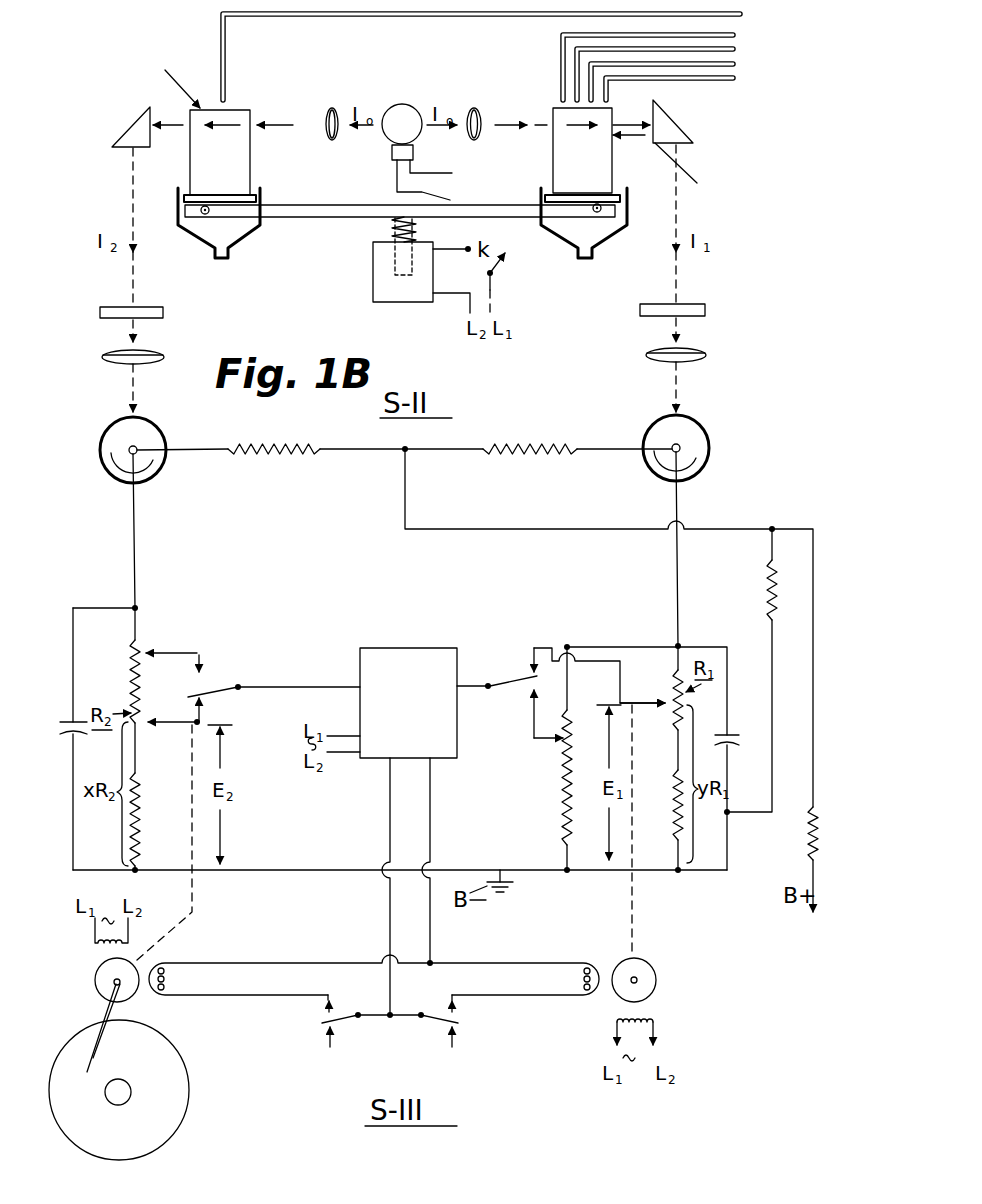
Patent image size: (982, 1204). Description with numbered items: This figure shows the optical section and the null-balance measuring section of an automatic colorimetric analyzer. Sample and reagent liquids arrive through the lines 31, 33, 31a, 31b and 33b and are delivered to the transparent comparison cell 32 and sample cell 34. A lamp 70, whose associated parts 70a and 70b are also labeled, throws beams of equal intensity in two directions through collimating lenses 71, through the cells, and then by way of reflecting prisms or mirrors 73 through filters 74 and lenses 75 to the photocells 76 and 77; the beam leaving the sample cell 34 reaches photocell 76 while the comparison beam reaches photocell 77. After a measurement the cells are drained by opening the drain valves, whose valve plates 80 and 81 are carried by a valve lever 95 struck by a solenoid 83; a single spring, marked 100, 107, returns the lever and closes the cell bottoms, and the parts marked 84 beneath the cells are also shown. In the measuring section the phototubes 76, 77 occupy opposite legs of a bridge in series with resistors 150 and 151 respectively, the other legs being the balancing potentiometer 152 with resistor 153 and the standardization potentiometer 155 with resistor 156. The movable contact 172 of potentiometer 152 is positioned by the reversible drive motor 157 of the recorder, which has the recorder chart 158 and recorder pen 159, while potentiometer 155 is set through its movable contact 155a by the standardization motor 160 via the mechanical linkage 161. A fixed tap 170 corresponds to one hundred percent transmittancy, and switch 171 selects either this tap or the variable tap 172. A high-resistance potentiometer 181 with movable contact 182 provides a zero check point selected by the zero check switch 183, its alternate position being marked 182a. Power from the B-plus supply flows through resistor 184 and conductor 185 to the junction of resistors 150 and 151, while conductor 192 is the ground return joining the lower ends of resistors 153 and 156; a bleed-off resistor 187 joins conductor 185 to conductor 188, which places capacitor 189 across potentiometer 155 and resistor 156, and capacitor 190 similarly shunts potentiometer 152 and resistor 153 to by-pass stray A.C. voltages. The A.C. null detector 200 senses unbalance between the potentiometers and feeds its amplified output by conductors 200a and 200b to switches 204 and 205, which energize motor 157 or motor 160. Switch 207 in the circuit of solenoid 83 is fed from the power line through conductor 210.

The line 31 is at (227, 67).
The line 31a is at (577, 62).
The line 31b is at (705, 67).
The comparison cell 32 is at (237, 150).
The line 33 is at (560, 95).
The line 33b is at (678, 82).
The sample cell 34 is at (562, 138).
The lamp 70 is at (439, 146).
The lamp lead 70a is at (453, 167).
The lamp lead 70b is at (445, 186).
The collimating lens 71 is at (325, 123).
The reflecting prism 73 is at (128, 141).
The filter 74 is at (149, 308).
The lens 75 is at (147, 364).
The photocell 76 is at (697, 437).
The photocell 77 is at (165, 436).
The drain valve 80 is at (257, 202).
The drain valve 81 is at (553, 197).
The solenoid 83 is at (383, 268).
The drain tray 84 is at (257, 195).
The valve lever 95 is at (317, 216).
The spring 100 is at (470, 229).
The return spring 107 is at (418, 229).
The resistor 150 is at (267, 455).
The resistor 151 is at (537, 453).
The balancing potentiometer 152 is at (132, 690).
The resistor 153 is at (142, 793).
The potentiometer 155 is at (685, 720).
The movable contact 155a is at (647, 702).
The resistor 156 is at (677, 825).
The reversible drive motor 157 is at (110, 968).
The recorder chart 158 is at (165, 1081).
The recorder pen 159 is at (98, 1053).
The standardization motor 160 is at (645, 979).
The mechanical linkage 161 is at (632, 912).
The fixed tap 170 is at (172, 652).
The switch 171 is at (215, 687).
The movable contact 172 is at (173, 725).
The potentiometer 181 is at (563, 795).
The movable contact 182 is at (543, 742).
The contact 182a is at (530, 698).
The zero check switch 183 is at (510, 682).
The resistor 184 is at (808, 820).
The conductor 185 is at (557, 530).
The resistor 187 is at (770, 600).
The conductor 188 is at (727, 847).
The capacitor 189 is at (730, 733).
The capacitor 190 is at (66, 718).
The conductor 192 is at (343, 872).
The A.C. null detector 200 is at (412, 655).
The conductor 200a is at (390, 932).
The conductor 200b is at (432, 932).
The switch 204 is at (358, 1013).
The switch 205 is at (438, 1015).
The switch 207 is at (498, 263).
The conductor 210 is at (492, 294).